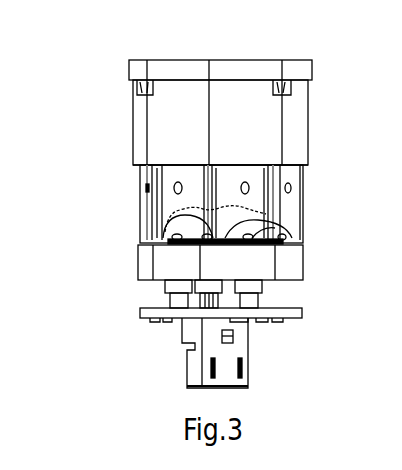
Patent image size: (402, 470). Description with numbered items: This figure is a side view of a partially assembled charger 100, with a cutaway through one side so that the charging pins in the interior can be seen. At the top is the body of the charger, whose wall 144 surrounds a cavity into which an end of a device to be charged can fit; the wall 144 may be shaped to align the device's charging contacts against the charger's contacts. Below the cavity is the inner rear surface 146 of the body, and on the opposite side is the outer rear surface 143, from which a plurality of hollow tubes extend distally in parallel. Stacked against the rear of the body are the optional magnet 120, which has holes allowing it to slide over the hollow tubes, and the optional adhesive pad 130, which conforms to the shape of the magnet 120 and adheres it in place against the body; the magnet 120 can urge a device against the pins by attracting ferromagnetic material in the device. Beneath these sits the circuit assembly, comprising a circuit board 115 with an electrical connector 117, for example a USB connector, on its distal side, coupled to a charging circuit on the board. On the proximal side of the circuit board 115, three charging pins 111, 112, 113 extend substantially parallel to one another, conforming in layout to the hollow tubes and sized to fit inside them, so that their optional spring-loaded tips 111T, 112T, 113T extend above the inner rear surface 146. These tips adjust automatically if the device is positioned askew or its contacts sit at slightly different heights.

The charger 100 is at (287, 34).
The wall 144 is at (147, 135).
The outer rear surface 143 is at (140, 243).
The inner rear surface 146 is at (177, 234).
The spring-loaded tip 113T is at (172, 216).
The spring-loaded tip 112T is at (240, 209).
The spring-loaded tip 111T is at (275, 222).
The adhesive pad 130 is at (302, 243).
The magnet 120 is at (155, 260).
The charging pin 113 is at (177, 302).
The charging pin 112 is at (210, 294).
The charging pin 111 is at (250, 300).
The circuit board 115 is at (140, 312).
The electrical connector 117 is at (187, 365).